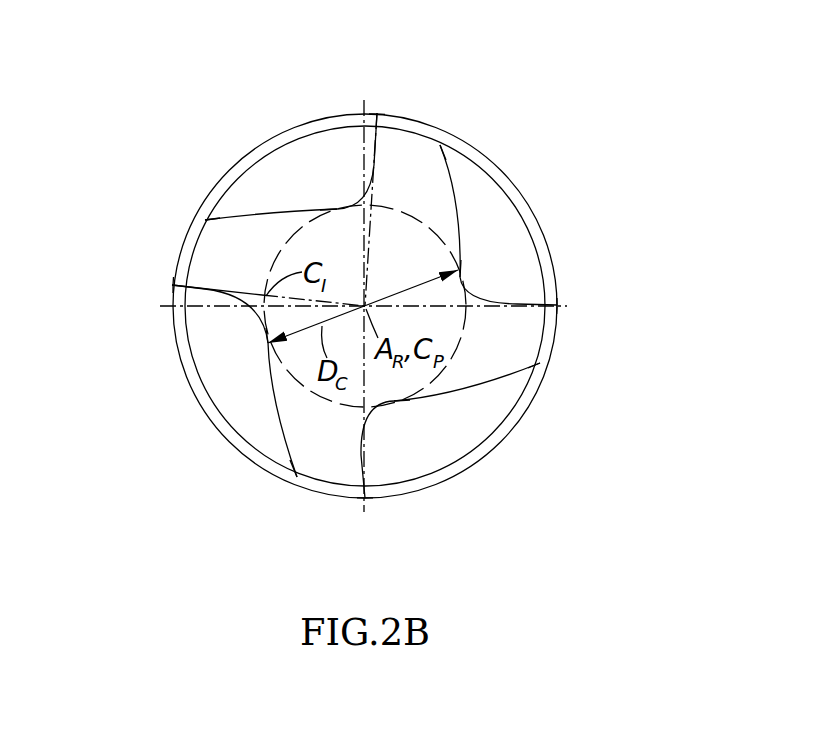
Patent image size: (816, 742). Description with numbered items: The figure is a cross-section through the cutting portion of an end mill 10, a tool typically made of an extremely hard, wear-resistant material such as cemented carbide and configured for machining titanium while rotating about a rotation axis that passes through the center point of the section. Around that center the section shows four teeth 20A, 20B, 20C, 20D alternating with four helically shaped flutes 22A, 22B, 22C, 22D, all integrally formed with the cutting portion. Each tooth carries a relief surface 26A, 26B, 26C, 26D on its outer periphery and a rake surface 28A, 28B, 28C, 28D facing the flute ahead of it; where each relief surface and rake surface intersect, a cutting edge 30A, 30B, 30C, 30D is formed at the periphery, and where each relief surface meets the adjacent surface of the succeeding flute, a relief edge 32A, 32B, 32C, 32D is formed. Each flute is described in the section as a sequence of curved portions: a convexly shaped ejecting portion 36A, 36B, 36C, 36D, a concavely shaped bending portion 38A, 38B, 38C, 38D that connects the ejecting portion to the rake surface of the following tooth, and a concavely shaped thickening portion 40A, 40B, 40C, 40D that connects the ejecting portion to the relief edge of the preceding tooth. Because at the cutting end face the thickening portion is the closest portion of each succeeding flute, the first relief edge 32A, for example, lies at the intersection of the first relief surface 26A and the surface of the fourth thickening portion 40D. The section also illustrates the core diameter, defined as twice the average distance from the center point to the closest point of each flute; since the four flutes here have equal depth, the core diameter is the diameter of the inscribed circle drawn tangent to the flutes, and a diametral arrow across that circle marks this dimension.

The end mill 10 is at (602, 76).
The first tooth 20A is at (325, 460).
The second tooth 20B is at (522, 338).
The third tooth 20C is at (403, 142).
The fourth tooth 20D is at (196, 264).
The first flute 22A is at (463, 490).
The second flute 22B is at (551, 134).
The third flute 22C is at (266, 129).
The fourth flute 22D is at (185, 432).
The first relief surface 26A is at (289, 458).
The second relief surface 26B is at (541, 366).
The third relief surface 26C is at (398, 113).
The fourth relief surface 26D is at (198, 240).
The first rake surface 28A is at (361, 452).
The second rake surface 28B is at (506, 303).
The third rake surface 28C is at (363, 145).
The fourth rake surface 28D is at (208, 287).
The first cutting edge 30A is at (368, 499).
The second cutting edge 30B is at (559, 306).
The third cutting edge 30C is at (378, 112).
The fourth cutting edge 30D is at (173, 286).
The first relief edge 32A is at (295, 478).
The second relief edge 32B is at (540, 382).
The third relief edge 32C is at (441, 147).
The fourth relief edge 32D is at (199, 214).
The first ejecting portion 36A is at (517, 376).
The second ejecting portion 36B is at (458, 195).
The third ejecting portion 36C is at (230, 208).
The fourth ejecting portion 36D is at (268, 428).
The first bending portion 38A is at (399, 404).
The second bending portion 38B is at (462, 279).
The third bending portion 38C is at (333, 209).
The fourth bending portion 38D is at (247, 312).
The first thickening portion 40A is at (530, 388).
The second thickening portion 40B is at (446, 158).
The third thickening portion 40C is at (218, 224).
The fourth thickening portion 40D is at (284, 454).